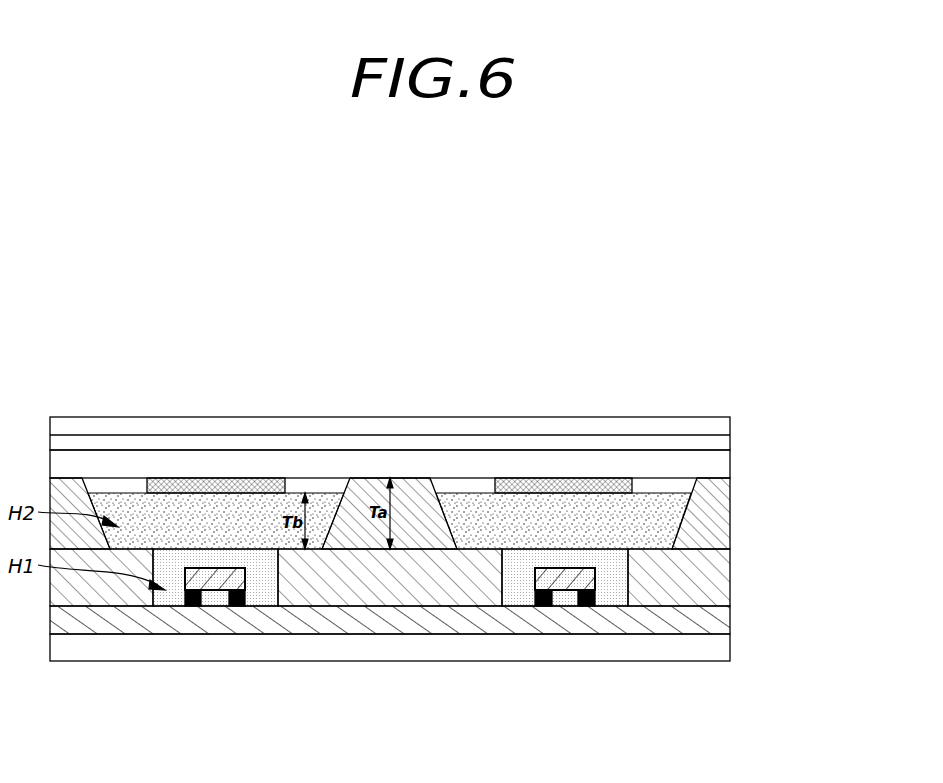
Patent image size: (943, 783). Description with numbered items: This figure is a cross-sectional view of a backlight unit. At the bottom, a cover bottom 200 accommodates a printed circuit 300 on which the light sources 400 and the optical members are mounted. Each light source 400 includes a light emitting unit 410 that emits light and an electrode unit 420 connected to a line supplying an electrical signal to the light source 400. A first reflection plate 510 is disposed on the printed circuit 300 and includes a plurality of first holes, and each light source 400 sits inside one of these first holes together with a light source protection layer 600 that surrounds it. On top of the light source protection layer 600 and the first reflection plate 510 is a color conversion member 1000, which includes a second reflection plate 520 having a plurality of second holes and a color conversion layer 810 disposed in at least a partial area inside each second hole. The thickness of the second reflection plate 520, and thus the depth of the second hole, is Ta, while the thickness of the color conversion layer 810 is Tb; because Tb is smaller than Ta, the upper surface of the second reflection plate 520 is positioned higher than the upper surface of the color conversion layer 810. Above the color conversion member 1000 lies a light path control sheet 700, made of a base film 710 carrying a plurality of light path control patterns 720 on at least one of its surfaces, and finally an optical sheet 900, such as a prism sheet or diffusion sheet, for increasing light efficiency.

The cover bottom 200 is at (720, 645).
The printed circuit 300 is at (724, 620).
The light source 400 is at (390, 661).
The light emitting unit 410 is at (535, 578).
The electrode unit 420 is at (590, 606).
The first reflection plate 510 is at (720, 580).
The second reflection plate 520 is at (720, 540).
The light source protection layer 600 is at (173, 600).
The light path control sheet 700 is at (454, 476).
The base film 710 is at (720, 463).
The light path control pattern 720 is at (638, 483).
The color conversion layer 810 is at (675, 518).
The optical sheet 900 is at (736, 417).
The color conversion member 1000 is at (457, 518).